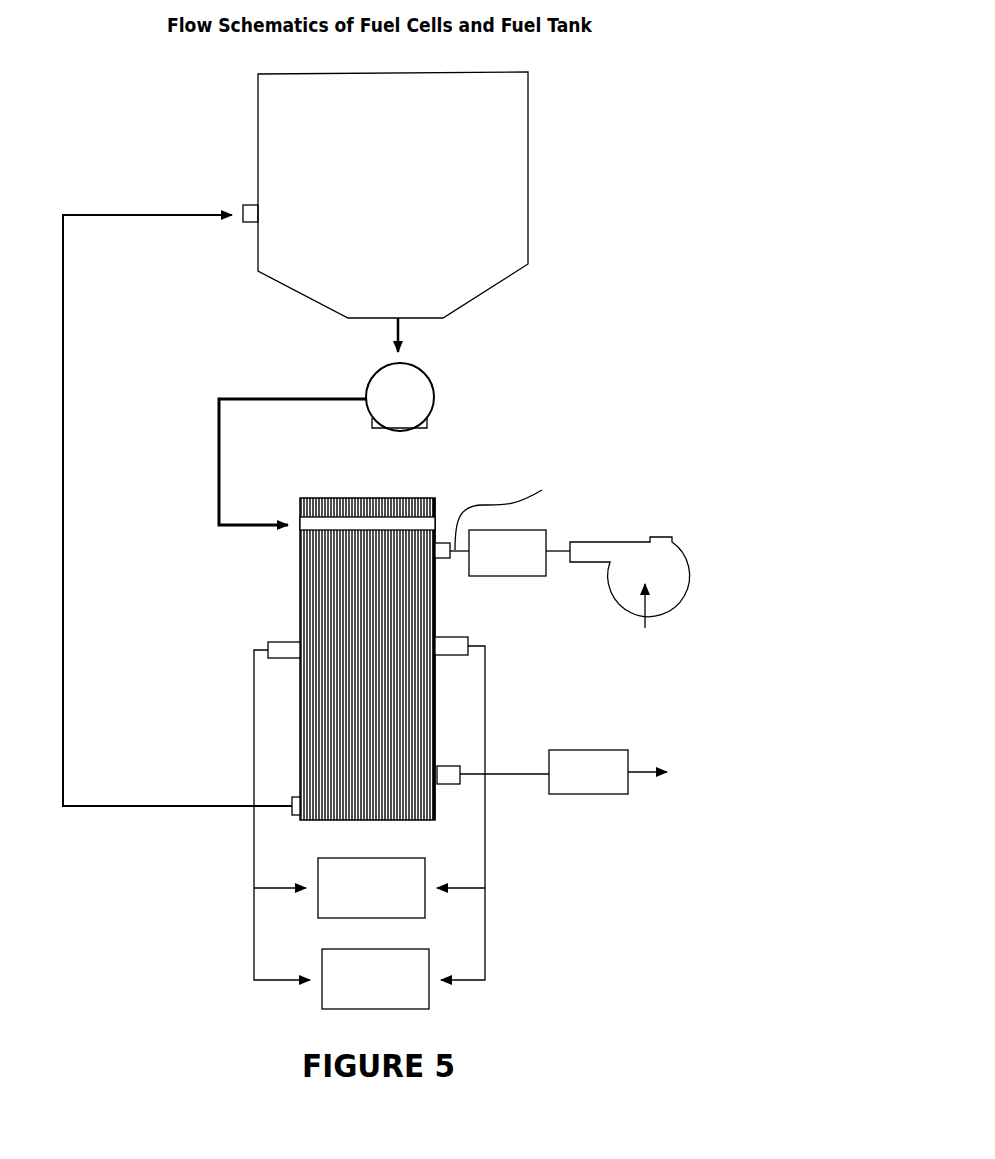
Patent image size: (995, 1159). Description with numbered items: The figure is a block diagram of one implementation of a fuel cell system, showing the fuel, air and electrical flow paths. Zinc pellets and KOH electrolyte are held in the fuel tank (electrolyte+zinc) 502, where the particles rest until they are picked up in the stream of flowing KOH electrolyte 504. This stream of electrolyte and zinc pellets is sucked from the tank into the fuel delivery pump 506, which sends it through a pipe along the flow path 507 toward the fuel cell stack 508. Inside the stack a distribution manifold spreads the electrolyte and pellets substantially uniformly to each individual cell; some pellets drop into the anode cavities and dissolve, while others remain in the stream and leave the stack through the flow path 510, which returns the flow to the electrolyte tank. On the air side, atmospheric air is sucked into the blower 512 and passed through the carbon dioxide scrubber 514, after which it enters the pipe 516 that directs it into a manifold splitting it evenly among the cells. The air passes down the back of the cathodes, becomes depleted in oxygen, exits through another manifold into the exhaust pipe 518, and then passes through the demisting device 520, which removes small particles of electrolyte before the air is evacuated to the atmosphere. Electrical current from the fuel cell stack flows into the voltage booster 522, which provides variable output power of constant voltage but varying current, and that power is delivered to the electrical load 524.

The fuel tank (electrolyte+zinc) 502 is at (515, 140).
The stream of flowing KOH electrolyte Q1 504 is at (403, 337).
The fuel delivery pump 506 is at (417, 390).
The flow path 507 is at (219, 465).
The fuel cell stack 508 is at (433, 503).
The flow path Q3 510 is at (69, 498).
The blower 512 is at (671, 565).
The carbon dioxide scrubber 514 is at (536, 533).
The pipe 516 is at (510, 509).
The exhaust pipe 518 is at (513, 766).
The demisting device 520 is at (617, 758).
The voltage booster 522 is at (413, 872).
The electrical load 524 is at (413, 973).